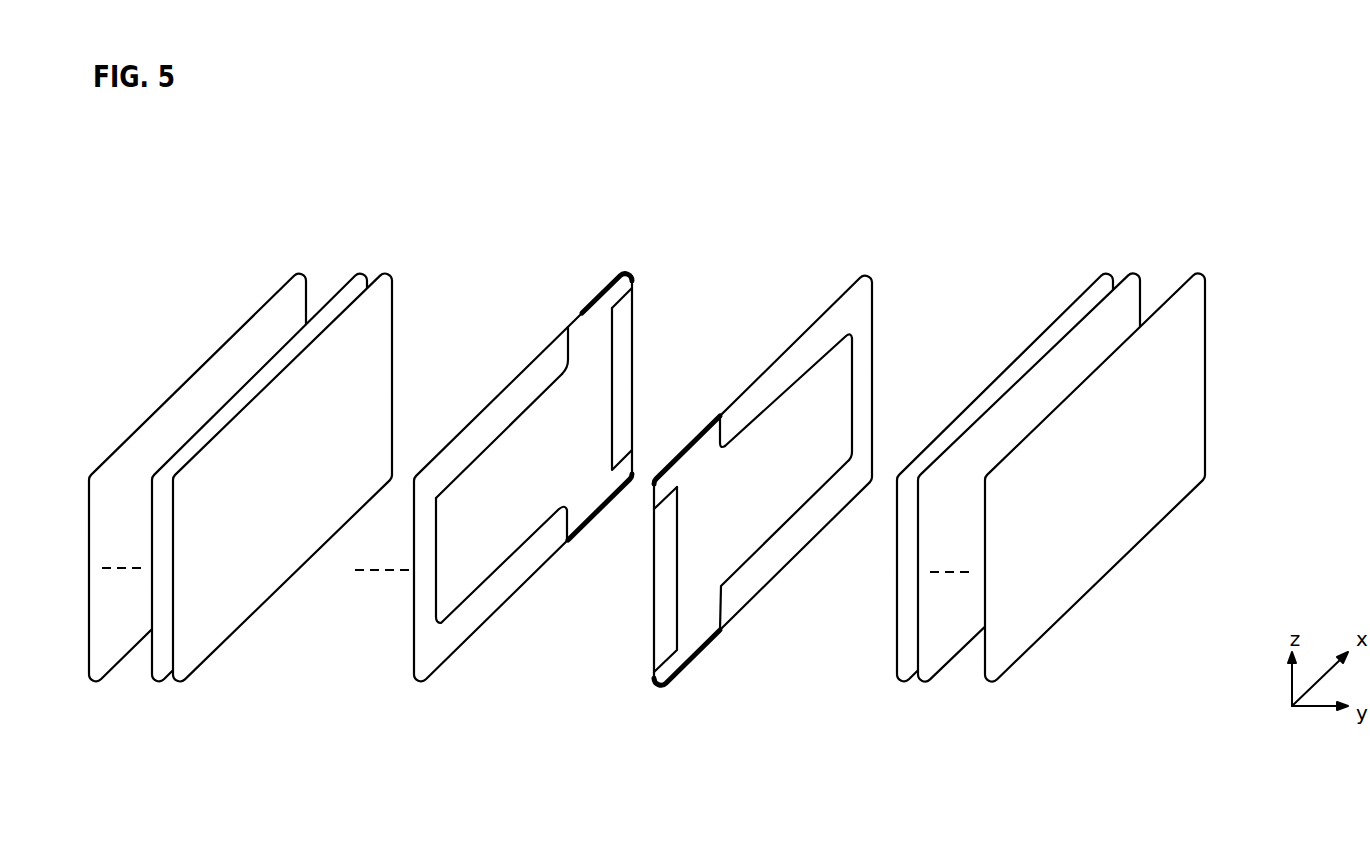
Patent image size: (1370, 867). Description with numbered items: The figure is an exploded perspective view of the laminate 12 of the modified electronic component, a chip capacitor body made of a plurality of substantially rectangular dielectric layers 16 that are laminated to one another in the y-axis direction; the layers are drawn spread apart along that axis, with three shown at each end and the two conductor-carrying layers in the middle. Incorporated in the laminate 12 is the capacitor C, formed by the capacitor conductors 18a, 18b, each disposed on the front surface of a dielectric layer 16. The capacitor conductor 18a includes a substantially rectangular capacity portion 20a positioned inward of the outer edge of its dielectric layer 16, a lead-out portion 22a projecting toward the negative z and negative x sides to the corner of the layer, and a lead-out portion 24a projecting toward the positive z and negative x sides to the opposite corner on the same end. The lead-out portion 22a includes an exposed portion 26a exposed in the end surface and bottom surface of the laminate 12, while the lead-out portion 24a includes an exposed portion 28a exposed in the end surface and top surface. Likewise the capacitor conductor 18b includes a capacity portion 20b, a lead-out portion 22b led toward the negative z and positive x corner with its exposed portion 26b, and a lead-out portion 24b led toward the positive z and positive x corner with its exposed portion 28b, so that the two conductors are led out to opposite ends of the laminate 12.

The laminate 12 is at (281, 130).
The dielectric layer 16 is at (300, 272).
The capacitor C is at (870, 270).
The capacitor conductor 18a is at (790, 362).
The capacitor conductor 18b is at (515, 398).
The capacity portion 20a is at (838, 380).
The capacity portion 20b is at (473, 493).
The lead-out portion 22a is at (802, 496).
The lead-out portion 22b is at (536, 447).
The lead-out portion 24a is at (699, 438).
The lead-out portion 24b is at (585, 314).
The exposed portion 26a is at (708, 646).
The exposed portion 26b is at (600, 520).
The exposed portion 28a is at (712, 414).
The exposed portion 28b is at (608, 292).